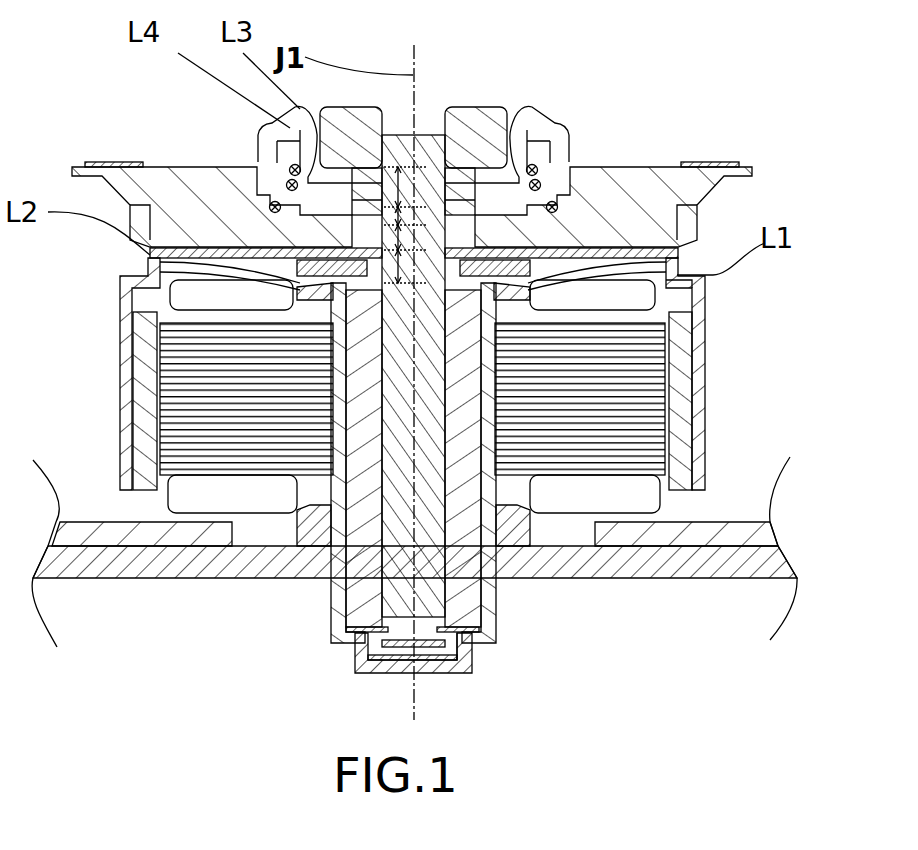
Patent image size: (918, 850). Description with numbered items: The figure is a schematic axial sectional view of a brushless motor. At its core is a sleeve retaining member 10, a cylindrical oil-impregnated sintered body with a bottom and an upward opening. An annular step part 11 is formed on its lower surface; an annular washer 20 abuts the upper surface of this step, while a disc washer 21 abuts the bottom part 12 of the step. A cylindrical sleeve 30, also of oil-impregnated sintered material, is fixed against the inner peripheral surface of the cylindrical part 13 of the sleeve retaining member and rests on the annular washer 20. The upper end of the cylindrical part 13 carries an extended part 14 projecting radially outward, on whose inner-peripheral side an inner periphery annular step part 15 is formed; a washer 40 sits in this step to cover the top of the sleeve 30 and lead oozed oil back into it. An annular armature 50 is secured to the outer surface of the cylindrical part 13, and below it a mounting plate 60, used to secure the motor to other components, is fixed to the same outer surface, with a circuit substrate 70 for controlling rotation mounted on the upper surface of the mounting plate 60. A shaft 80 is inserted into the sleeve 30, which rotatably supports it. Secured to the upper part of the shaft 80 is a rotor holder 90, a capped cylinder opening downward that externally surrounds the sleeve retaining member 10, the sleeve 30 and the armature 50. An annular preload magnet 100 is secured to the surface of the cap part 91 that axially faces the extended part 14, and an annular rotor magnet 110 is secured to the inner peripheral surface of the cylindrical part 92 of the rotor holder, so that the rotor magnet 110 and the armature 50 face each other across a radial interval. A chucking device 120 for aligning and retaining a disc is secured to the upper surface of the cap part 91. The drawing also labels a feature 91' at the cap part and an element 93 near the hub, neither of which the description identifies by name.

The sleeve retaining member 10 is at (414, 582).
The annular step part 11 is at (473, 637).
The bottom part 12 is at (424, 668).
The cylindrical part 13 is at (330, 590).
The extended part 14 is at (300, 287).
The inner periphery annular step part 15 is at (723, 294).
The annular washer 20 is at (414, 675).
The disc washer 21 is at (388, 660).
The sleeve 30 is at (438, 473).
The washer 40 is at (300, 297).
The armature 50 is at (235, 395).
The mounting plate 60 is at (147, 568).
The circuit substrate 70 is at (95, 535).
The shaft 80 is at (418, 100).
The rotor holder 90 is at (435, 363).
The cap part 91 is at (412, 179).
The turntable rim 91' is at (475, 193).
The cylindrical part 92 is at (700, 332).
The clamp 93 is at (573, 150).
The preload magnet 100 is at (533, 287).
The rotor magnet 110 is at (687, 410).
The chucking device 120 is at (433, 172).